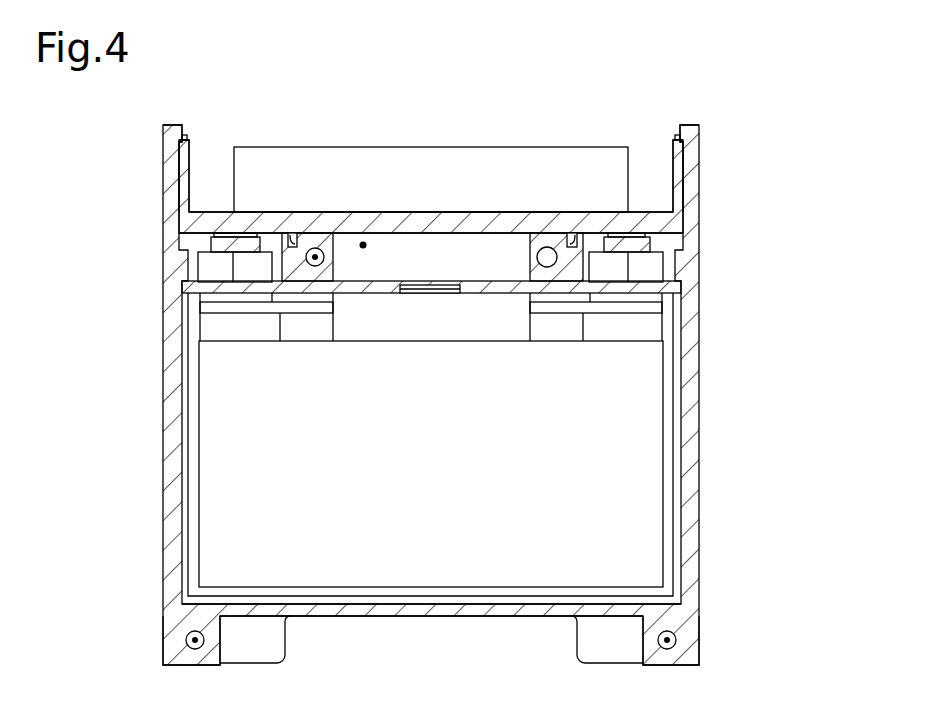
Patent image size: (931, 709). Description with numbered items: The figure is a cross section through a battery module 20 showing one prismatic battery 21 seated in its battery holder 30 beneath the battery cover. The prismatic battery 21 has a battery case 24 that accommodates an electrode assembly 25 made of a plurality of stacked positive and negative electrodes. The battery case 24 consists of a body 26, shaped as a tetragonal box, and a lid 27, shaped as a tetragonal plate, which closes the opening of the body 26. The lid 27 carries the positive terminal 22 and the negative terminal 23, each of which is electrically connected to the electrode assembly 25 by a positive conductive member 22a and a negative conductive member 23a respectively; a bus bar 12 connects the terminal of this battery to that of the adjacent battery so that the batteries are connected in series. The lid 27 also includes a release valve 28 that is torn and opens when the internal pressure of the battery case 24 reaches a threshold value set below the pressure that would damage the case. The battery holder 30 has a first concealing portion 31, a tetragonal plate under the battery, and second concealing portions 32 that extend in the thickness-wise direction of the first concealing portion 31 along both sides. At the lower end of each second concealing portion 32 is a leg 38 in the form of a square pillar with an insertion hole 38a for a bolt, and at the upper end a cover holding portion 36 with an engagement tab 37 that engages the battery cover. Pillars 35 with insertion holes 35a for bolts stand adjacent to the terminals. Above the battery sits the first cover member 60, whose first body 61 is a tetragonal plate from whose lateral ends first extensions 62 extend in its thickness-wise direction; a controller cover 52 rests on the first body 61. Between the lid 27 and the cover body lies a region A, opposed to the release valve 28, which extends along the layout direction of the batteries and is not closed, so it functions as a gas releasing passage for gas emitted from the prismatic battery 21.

The battery module 20 is at (79, 149).
The prismatic battery 21 is at (688, 486).
The positive terminal 22 is at (210, 262).
The positive conductive member 22a is at (263, 308).
The negative terminal 23 is at (640, 266).
The negative conductive member 23a is at (601, 307).
The battery case 24 is at (752, 300).
The electrode assembly 25 is at (664, 424).
The body 26 is at (678, 356).
The lid 27 is at (680, 290).
The release valve 28 is at (430, 294).
The battery holder 30 is at (700, 406).
The first concealing portion 31 is at (443, 617).
The second concealing portion 32 is at (172, 422).
The pillar 35 is at (327, 243).
The insertion hole 35a is at (323, 257).
The cover holding portion 36 is at (172, 158).
The engagement tab 37 is at (184, 134).
The leg 38 is at (170, 660).
The insertion hole 38a is at (186, 637).
The controller cover 52 is at (519, 146).
The first cover member 60 is at (678, 226).
The first body 61 is at (462, 227).
The first extension 62 is at (678, 158).
The bus bar 12 is at (240, 242).
The region A is at (364, 244).